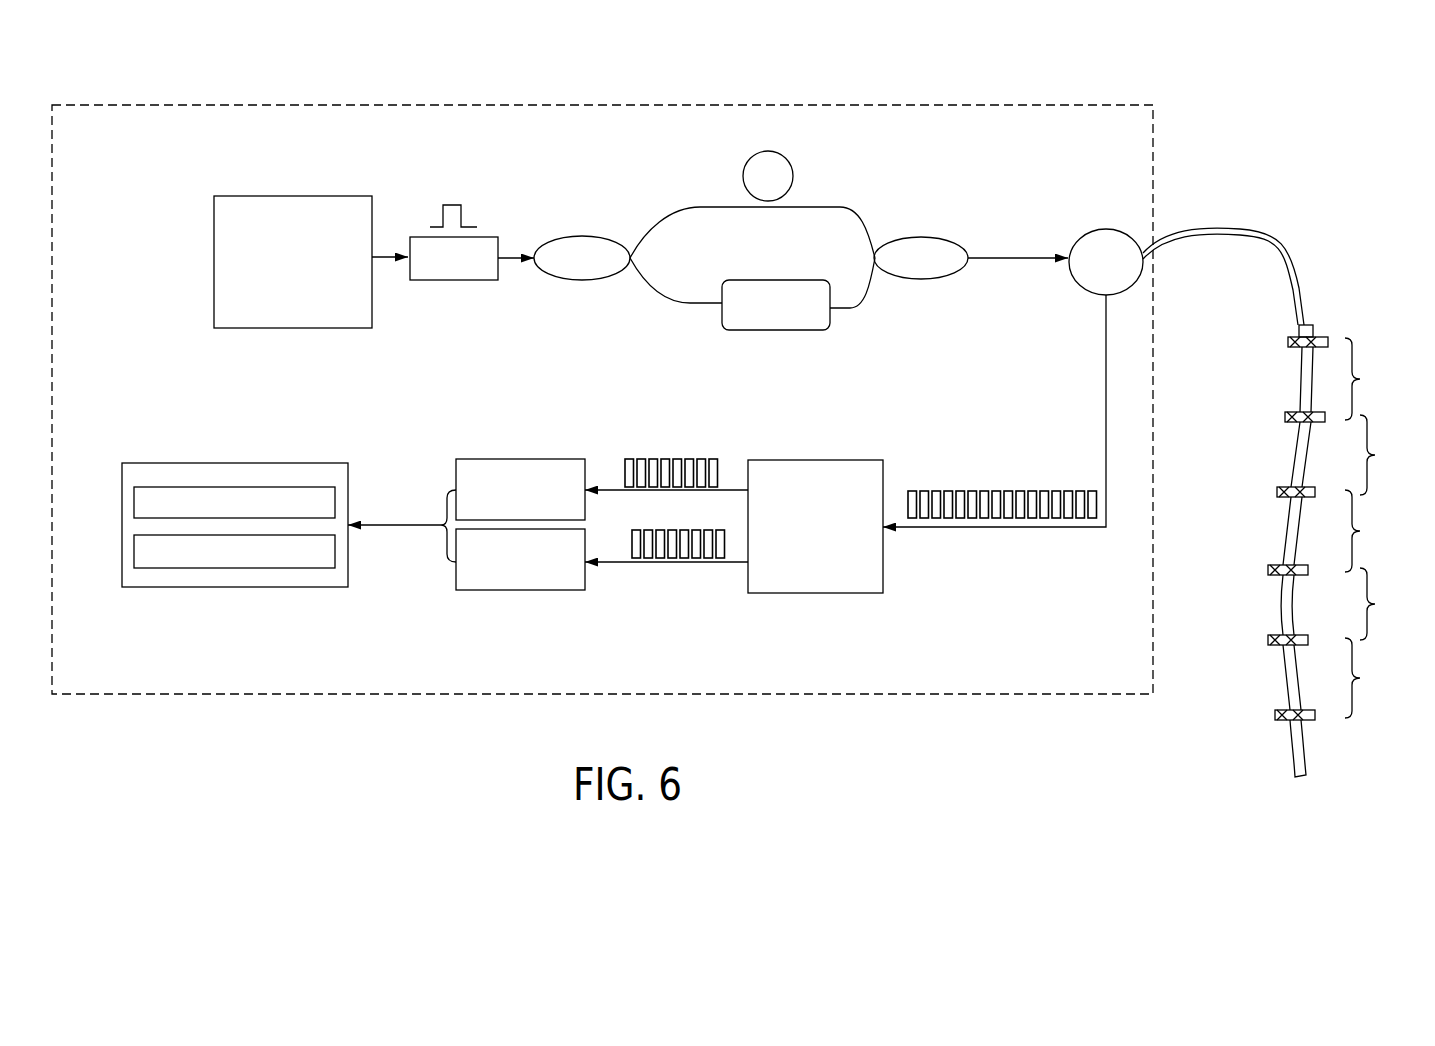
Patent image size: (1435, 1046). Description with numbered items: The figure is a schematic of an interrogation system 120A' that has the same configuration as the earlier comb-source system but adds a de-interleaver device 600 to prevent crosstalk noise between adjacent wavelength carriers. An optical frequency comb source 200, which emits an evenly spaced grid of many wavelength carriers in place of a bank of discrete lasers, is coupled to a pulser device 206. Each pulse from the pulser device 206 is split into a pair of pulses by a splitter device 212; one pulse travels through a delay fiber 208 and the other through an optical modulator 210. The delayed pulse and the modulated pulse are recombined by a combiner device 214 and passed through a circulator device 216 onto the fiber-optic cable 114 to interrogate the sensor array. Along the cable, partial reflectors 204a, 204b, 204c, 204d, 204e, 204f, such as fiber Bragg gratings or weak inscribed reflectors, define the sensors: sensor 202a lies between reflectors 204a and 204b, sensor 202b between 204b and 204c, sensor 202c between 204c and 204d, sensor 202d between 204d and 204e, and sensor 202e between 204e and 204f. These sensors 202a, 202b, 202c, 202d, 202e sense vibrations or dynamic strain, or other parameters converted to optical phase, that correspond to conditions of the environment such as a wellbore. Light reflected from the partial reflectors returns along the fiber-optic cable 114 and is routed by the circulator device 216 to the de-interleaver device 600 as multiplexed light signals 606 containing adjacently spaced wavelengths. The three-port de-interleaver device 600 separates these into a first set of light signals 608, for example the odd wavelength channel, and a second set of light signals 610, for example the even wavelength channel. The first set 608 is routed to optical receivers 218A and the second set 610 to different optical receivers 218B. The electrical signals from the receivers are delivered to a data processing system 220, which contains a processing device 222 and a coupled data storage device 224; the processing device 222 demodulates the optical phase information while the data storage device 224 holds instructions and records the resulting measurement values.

The interrogation system 120A' is at (643, 397).
The optical frequency comb source 200 is at (214, 196).
The pulser device 206 is at (488, 237).
The splitter device 212 is at (582, 237).
The delay fiber 208 is at (700, 205).
The optical modulator 210 is at (720, 328).
The combiner device 214 is at (913, 236).
The circulator device 216 is at (1100, 230).
The fiber-optic cable 114 is at (1238, 233).
The partial reflector 204a is at (1268, 350).
The partial reflector 204b is at (1280, 422).
The partial reflector 204c is at (1267, 492).
The partial reflector 204d is at (1263, 572).
The partial reflector 204e is at (1265, 643).
The partial reflector 204f is at (1267, 715).
The sensor 202a is at (1374, 379).
The sensor 202b is at (1389, 455).
The sensor 202c is at (1374, 531).
The sensor 202d is at (1389, 604).
The sensor 202e is at (1374, 678).
The de-interleaver device 600 is at (857, 460).
The light signals 606 is at (1000, 465).
The first set of light signals 608 is at (665, 433).
The second set of light signals 610 is at (665, 583).
The optical receivers 218A is at (520, 459).
The optical receivers 218B is at (522, 590).
The data processing system 220 is at (233, 588).
The processing device 222 is at (135, 503).
The data storage device 224 is at (135, 552).